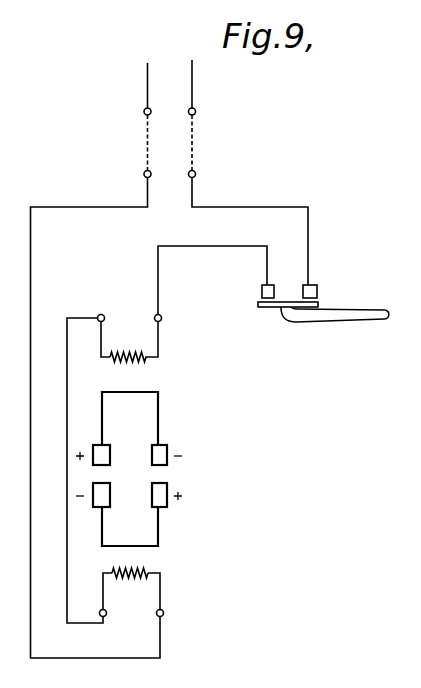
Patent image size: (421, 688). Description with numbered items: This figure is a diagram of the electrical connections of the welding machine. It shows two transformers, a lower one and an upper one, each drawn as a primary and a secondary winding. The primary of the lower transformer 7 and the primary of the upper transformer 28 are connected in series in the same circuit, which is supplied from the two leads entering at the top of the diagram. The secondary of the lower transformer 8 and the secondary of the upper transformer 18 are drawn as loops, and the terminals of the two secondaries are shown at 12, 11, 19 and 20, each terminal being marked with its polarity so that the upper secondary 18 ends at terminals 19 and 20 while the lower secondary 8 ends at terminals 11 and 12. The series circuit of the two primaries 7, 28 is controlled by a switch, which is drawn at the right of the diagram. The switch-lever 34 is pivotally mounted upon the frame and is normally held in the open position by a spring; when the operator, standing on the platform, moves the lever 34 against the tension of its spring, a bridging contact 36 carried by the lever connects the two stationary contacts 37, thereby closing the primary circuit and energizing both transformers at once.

The primary of the lower transformer 7 is at (130, 578).
The secondary of the lower transformer 8 is at (132, 545).
The terminal of the secondary 11 is at (110, 494).
The terminal of the secondary 12 is at (168, 486).
The secondary of the upper transformer 18 is at (130, 393).
The terminal of the secondary 19 is at (97, 449).
The terminal of the secondary 20 is at (168, 462).
The primary of the upper transformer 28 is at (129, 353).
The switch-lever 34 is at (350, 320).
The bridging contact 36 is at (273, 308).
The stationary contacts 37 is at (262, 290).